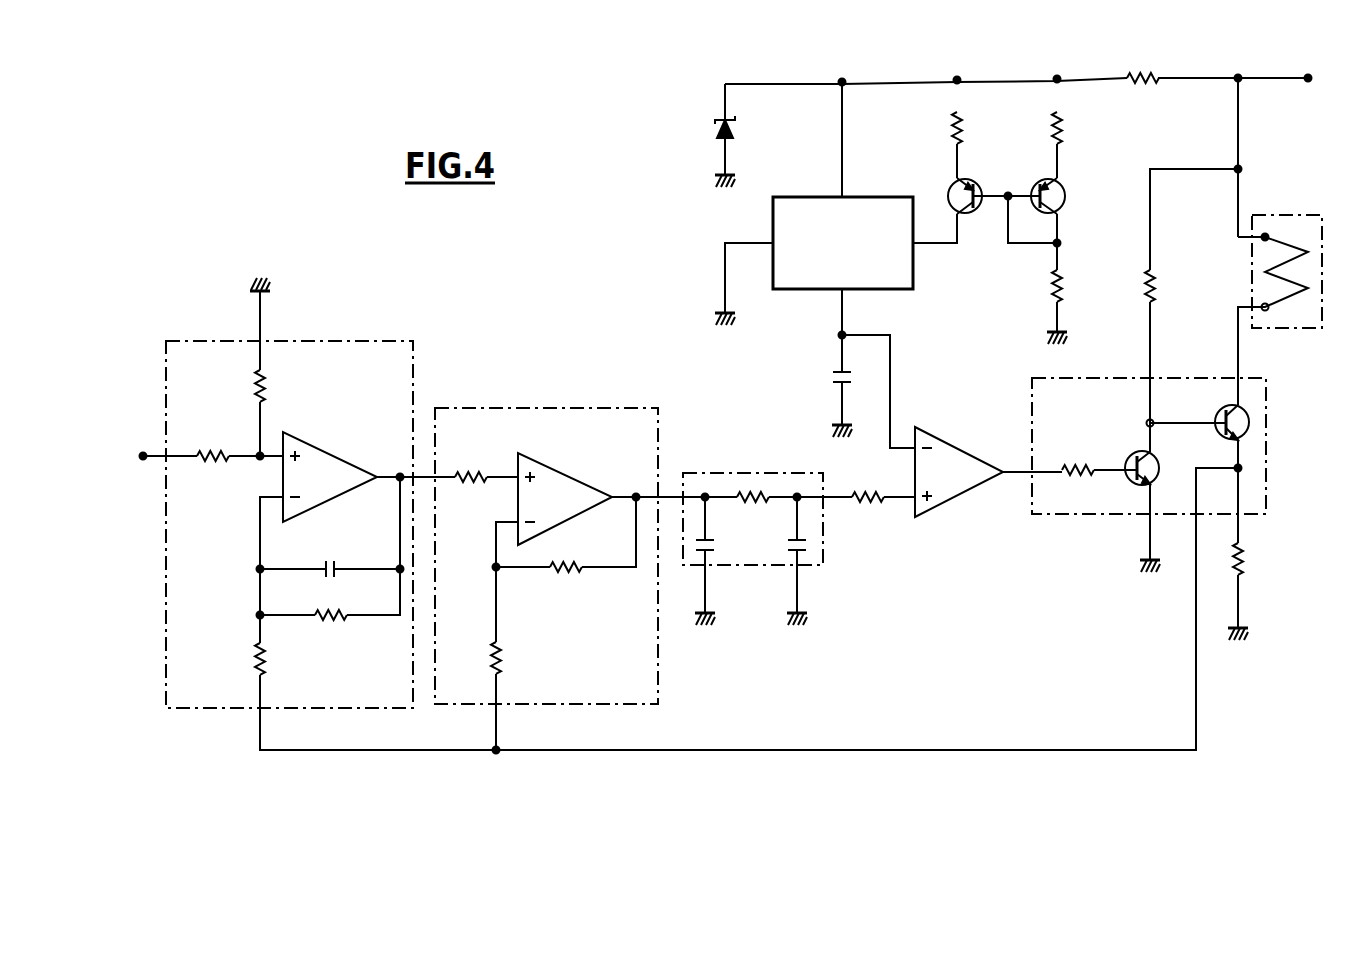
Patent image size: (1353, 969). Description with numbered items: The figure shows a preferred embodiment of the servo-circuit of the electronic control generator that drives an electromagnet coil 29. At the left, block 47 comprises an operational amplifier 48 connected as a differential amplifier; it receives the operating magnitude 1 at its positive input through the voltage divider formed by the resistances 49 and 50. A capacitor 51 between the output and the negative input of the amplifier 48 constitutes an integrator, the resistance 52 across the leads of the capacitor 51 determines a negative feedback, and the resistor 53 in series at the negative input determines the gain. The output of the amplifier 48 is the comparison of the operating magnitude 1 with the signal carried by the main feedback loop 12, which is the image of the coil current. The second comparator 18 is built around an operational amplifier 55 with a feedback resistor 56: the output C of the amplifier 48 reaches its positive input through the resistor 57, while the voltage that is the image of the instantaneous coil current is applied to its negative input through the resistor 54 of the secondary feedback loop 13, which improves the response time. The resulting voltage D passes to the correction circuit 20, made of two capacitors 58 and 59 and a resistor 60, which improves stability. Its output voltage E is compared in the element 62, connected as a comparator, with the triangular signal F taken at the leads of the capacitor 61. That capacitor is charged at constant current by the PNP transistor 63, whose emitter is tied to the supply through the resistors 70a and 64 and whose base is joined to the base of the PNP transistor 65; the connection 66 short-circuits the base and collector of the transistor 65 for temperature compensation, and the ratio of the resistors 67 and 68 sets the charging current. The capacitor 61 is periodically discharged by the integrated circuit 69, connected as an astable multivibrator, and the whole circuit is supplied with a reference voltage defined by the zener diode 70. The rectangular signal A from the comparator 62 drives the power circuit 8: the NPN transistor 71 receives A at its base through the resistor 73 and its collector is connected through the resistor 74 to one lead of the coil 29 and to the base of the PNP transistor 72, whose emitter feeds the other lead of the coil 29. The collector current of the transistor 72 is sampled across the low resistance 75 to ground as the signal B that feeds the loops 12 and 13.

The operating magnitude 1 is at (151, 455).
The resistance 49 is at (220, 454).
The resistance 50 is at (264, 388).
The block 47 is at (348, 341).
The operational amplifier 48 is at (337, 471).
The capacitor 51 is at (333, 561).
The resistance 52 is at (332, 622).
The resistor 53 is at (255, 662).
The second comparator 18 is at (543, 408).
The resistor 57 is at (471, 473).
The operational amplifier 55 is at (566, 475).
The feedback resistor 56 is at (565, 575).
The resistor 54 is at (500, 660).
The secondary feedback loop 13 is at (500, 730).
The correction circuit 20 is at (731, 473).
The resistor 60 is at (760, 493).
The capacitor 58 is at (712, 552).
The capacitor 59 is at (808, 552).
The capacitor 61 is at (830, 380).
The element connected as a comparator 62 is at (960, 458).
The integrated circuit 69 is at (805, 205).
The zener diode 70 is at (715, 132).
The resistor 70a is at (1135, 75).
The resistor 64 is at (952, 130).
The PNP transistor 63 is at (950, 185).
The resistor 67 is at (1062, 130).
The PNP transistor 65 is at (1062, 185).
The connection 66 is at (1008, 250).
The resistor 68 is at (1062, 288).
The resistor 74 is at (1155, 288).
The coil of the electromagnet 29 is at (1292, 215).
The power circuit 8 is at (1100, 378).
The resistor 73 is at (1072, 465).
The NPN transistor 71 is at (1130, 455).
The PNP transistor 72 is at (1250, 426).
The low resistance 75 is at (1252, 560).
The main feedback loop 12 is at (848, 750).